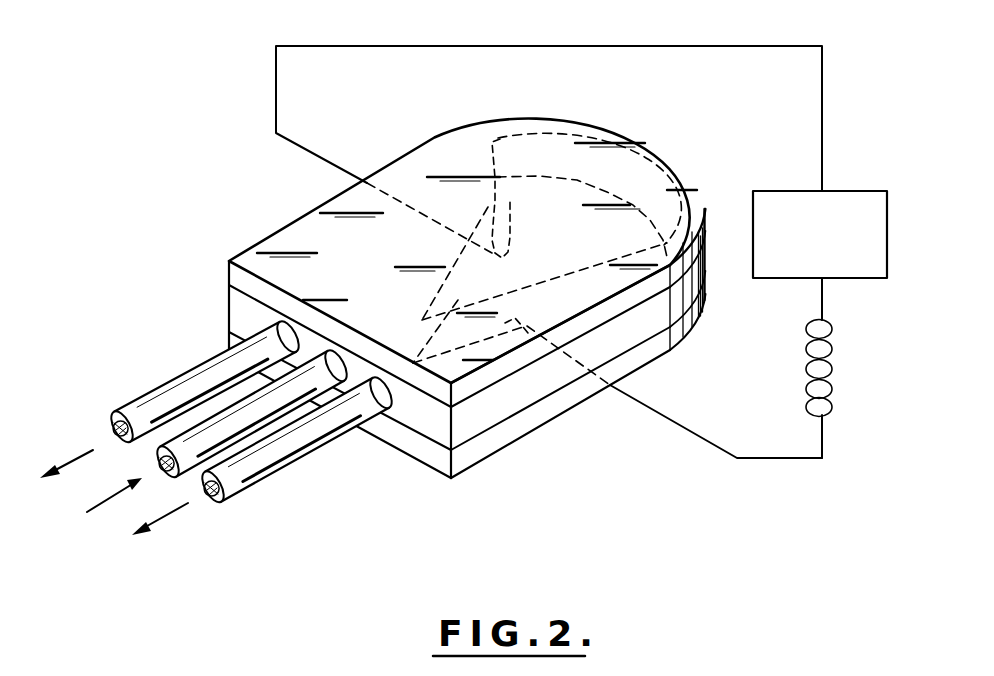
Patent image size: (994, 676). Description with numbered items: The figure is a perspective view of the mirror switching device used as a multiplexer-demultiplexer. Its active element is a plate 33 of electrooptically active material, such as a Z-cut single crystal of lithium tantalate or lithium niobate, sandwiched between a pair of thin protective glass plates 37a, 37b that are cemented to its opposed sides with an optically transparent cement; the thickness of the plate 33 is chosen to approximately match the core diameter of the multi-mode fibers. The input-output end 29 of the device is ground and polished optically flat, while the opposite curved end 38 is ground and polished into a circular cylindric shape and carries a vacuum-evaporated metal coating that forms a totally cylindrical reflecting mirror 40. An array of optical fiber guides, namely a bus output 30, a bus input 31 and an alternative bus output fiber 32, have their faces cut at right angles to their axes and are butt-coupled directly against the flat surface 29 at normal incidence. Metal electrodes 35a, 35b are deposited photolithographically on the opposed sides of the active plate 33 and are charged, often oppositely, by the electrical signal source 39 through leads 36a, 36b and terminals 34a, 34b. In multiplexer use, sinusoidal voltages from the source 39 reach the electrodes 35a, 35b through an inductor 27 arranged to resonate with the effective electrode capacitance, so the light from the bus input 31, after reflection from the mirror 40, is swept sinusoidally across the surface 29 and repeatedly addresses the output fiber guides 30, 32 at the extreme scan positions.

The inductor 27 is at (833, 367).
The input-output end 29 is at (237, 312).
The bus output 30 is at (155, 392).
The bus input 31 is at (158, 473).
The alternative bus output fiber 32 is at (297, 483).
The plate 33 is at (465, 423).
The terminal 34a is at (505, 235).
The terminal 34b is at (533, 282).
The electrode 35a is at (560, 137).
The electrode 35b is at (687, 164).
The lead 36a is at (773, 48).
The lead 36b is at (767, 460).
The protective glass plate 37a is at (510, 367).
The protective glass plate 37b is at (653, 350).
The curved end 38 is at (640, 127).
The electrical signal source 39 is at (888, 232).
The cylindrical reflecting mirror 40 is at (705, 273).